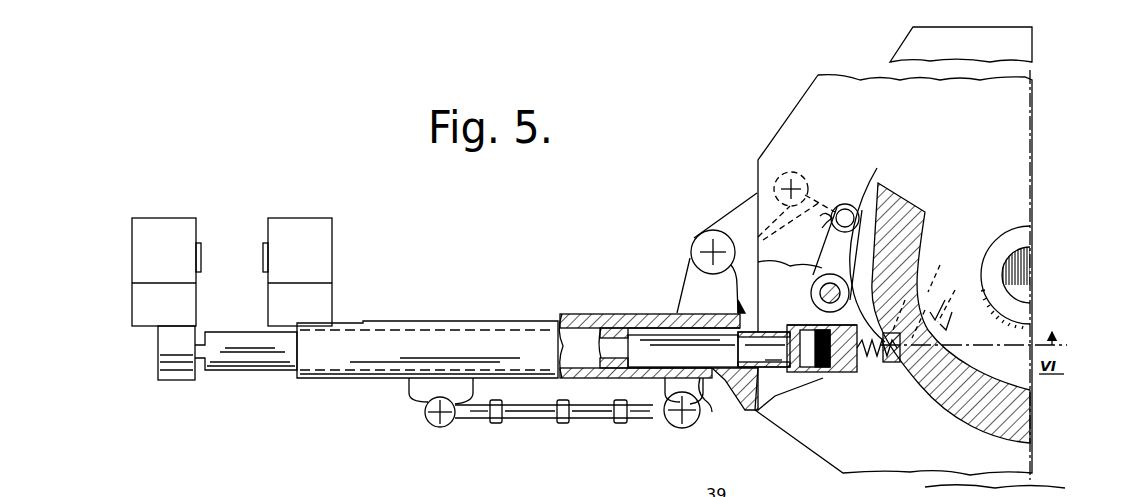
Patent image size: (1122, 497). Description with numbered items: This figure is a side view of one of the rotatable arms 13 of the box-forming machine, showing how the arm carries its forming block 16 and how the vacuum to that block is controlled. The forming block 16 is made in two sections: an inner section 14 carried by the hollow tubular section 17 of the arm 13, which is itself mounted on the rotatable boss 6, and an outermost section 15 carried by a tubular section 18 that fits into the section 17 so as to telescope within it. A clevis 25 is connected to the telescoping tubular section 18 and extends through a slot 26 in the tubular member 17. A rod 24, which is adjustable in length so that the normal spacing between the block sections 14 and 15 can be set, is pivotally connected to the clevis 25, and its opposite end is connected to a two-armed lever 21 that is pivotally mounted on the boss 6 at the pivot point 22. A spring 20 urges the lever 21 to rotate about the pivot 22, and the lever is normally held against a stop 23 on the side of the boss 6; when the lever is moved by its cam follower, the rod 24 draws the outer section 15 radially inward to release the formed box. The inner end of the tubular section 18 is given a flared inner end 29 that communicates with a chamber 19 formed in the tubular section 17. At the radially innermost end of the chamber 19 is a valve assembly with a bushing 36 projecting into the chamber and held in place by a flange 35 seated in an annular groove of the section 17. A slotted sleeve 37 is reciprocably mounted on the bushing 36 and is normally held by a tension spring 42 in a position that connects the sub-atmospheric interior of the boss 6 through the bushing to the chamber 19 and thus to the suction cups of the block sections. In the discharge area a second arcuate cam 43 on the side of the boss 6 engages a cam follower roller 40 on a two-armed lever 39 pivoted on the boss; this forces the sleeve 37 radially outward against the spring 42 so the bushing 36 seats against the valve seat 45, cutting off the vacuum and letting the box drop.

The rotatable boss 6 is at (808, 105).
The rotatable arm 13 is at (427, 354).
The inner section of forming block 14 is at (318, 252).
The outermost section of forming block 15 is at (150, 259).
The forming block 16 is at (236, 252).
The hollow tubular section 17 is at (576, 318).
The tubular section 18 is at (258, 333).
The chamber 19 is at (716, 392).
The spring 20 is at (940, 276).
The two-armed lever 21 is at (692, 285).
The pivot point 22 is at (692, 243).
The stop 23 is at (826, 192).
The rod 24 is at (558, 423).
The clevis 25 is at (425, 398).
The slot 26 is at (345, 378).
The flared inner end 29 is at (680, 346).
The flange 35 is at (764, 367).
The bushing 36 is at (772, 325).
The sleeve 37 is at (823, 378).
The two-armed lever 39 is at (832, 250).
The cam follower roller 40 is at (853, 248).
The tension spring 42 is at (866, 370).
The second arcuate cam 43 is at (1012, 398).
The valve seat 45 is at (839, 298).